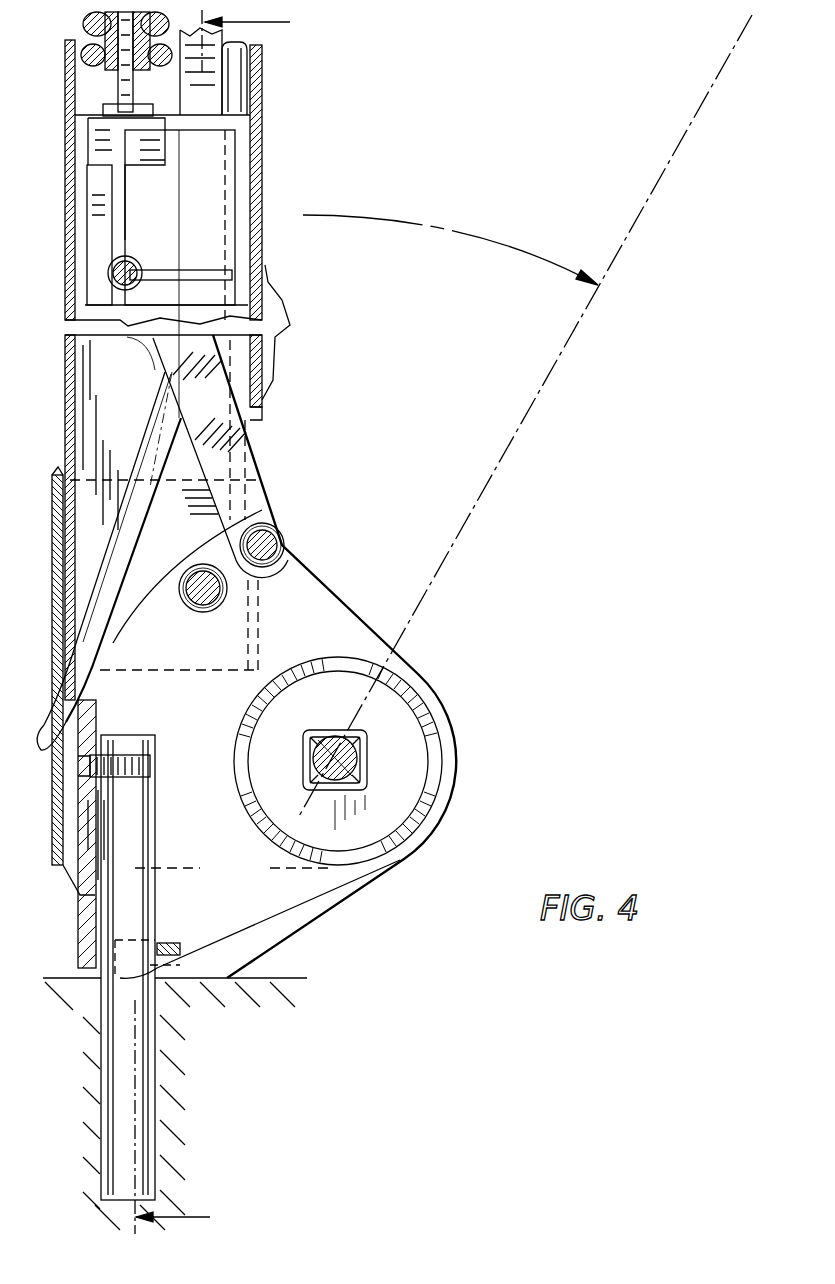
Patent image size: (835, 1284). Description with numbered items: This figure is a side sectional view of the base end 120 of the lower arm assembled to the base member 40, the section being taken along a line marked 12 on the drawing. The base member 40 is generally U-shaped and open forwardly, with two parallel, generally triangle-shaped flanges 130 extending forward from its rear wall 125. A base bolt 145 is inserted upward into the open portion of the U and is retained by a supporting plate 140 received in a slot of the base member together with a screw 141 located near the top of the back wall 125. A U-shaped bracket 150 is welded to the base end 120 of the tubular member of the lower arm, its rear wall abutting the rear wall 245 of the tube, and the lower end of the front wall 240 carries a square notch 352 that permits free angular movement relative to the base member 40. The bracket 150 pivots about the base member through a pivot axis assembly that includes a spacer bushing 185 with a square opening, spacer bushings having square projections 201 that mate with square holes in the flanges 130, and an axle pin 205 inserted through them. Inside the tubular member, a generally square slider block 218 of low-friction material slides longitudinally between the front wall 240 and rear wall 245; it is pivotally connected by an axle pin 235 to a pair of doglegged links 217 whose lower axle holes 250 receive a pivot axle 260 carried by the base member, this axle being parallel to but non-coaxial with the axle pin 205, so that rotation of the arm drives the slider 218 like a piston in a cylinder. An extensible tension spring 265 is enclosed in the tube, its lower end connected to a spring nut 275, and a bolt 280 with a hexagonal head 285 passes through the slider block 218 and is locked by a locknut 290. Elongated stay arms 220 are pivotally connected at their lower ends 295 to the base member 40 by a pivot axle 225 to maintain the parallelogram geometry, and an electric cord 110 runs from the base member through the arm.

The section line 12- 12 is at (229, 622).
The base member 40 is at (318, 635).
The electric cord 110 is at (148, 456).
The base end 120 is at (195, 678).
The rear wall 125 is at (80, 895).
The flanges 130 is at (420, 682).
The supporting plate 140 is at (250, 958).
The screw 141 is at (112, 784).
The base bolt 145 is at (140, 1055).
The U-shaped bracket 150 is at (330, 908).
The spacer bushing 185 is at (422, 711).
The square projections 201 is at (362, 784).
The axle pin 205 is at (348, 757).
The doglegged links 217 is at (240, 470).
The slider block 218 is at (217, 193).
The stay arms 220 is at (182, 522).
The pivot axle 225 is at (197, 615).
The axle pin 235 is at (138, 257).
The front wall 240 is at (262, 243).
The rear wall 245 is at (87, 330).
The axle holes 250 is at (275, 575).
The pivot axle 260 is at (273, 545).
The tension spring 265 is at (236, 58).
The spring nut 275 is at (172, 52).
The bolt 280 is at (155, 118).
The hexagonal head 285 is at (155, 370).
The locknut 290 is at (150, 170).
The lower ends 295 is at (208, 573).
The square notch 352 is at (262, 418).